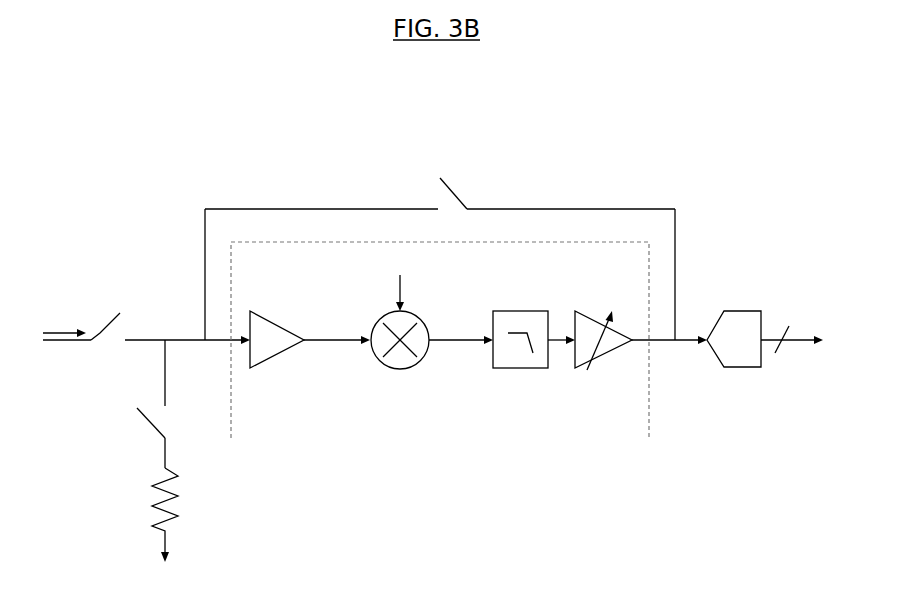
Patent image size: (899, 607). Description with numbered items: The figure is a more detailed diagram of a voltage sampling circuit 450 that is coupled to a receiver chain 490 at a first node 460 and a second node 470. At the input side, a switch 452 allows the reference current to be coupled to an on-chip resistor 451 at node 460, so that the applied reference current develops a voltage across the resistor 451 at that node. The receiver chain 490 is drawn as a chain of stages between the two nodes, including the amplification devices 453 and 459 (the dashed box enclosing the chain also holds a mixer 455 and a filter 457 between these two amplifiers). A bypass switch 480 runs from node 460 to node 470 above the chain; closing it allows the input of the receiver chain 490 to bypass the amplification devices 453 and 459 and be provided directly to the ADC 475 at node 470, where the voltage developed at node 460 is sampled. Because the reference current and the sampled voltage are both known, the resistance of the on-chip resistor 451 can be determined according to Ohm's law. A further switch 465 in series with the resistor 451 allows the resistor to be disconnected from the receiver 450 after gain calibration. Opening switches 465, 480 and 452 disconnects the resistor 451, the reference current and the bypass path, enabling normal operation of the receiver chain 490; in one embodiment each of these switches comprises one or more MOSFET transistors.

The voltage sampling circuit 450 is at (734, 124).
The on-chip resistor 451 is at (153, 499).
The switch 452 is at (102, 318).
The amplification device 453 is at (287, 353).
The mixer 455 is at (398, 370).
The filter 457 is at (516, 370).
The amplification device 459 is at (582, 370).
The node 460 is at (205, 345).
The switch 465 is at (137, 424).
The node 470 is at (673, 345).
The ADC 475 is at (738, 372).
The switch 480 is at (460, 188).
The receiver chain 490 is at (450, 440).